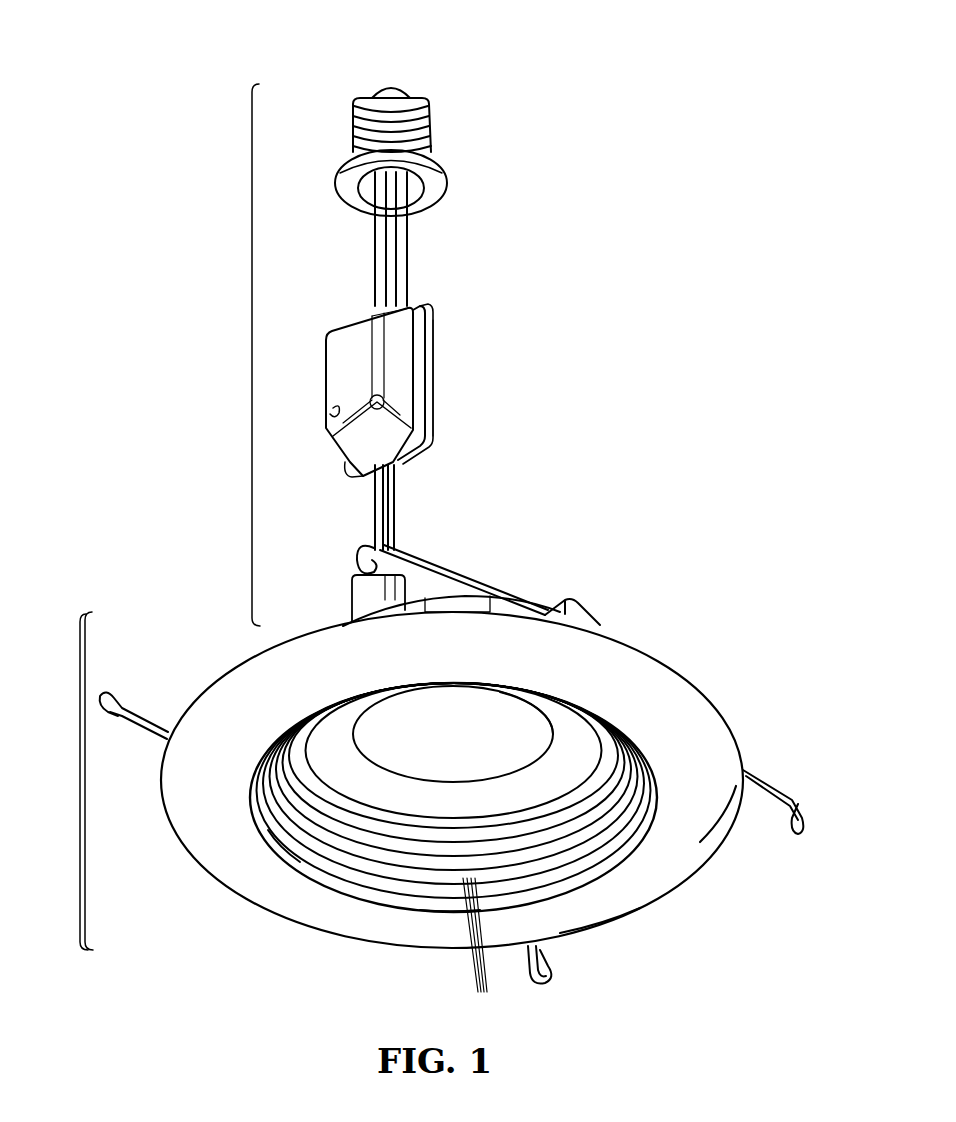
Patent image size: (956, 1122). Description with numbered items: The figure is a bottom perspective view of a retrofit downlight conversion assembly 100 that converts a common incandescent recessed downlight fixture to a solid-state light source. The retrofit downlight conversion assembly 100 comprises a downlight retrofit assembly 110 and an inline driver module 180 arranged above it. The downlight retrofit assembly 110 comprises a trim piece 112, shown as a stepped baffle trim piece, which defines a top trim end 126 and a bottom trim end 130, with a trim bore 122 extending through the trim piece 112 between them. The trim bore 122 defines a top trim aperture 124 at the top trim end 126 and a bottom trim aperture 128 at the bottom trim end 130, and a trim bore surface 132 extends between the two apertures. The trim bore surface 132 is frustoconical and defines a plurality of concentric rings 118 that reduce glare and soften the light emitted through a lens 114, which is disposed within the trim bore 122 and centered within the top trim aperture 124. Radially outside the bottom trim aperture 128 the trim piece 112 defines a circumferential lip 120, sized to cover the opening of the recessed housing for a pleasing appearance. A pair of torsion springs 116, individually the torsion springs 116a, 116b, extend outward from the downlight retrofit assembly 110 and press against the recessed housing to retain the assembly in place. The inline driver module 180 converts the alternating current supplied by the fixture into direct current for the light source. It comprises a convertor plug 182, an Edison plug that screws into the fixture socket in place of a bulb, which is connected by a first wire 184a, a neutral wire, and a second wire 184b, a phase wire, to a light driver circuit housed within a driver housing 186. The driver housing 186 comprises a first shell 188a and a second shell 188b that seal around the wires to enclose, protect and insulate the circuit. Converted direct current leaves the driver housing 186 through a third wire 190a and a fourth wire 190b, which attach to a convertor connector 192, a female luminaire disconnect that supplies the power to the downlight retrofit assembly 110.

The retrofit downlight conversion assembly 100 is at (115, 71).
The downlight retrofit assembly 110 is at (84, 786).
The trim piece 112 is at (668, 882).
The lens 114 is at (453, 730).
The torsion springs 116 is at (134, 715).
The torsion spring 116a is at (550, 984).
The torsion spring 116b is at (807, 814).
The concentric rings 118 is at (485, 992).
The circumferential lip 120 is at (712, 828).
The trim bore 122 is at (386, 872).
The top trim aperture 124 is at (509, 774).
The top trim end 126 is at (579, 746).
The bottom trim aperture 128 is at (440, 915).
The bottom trim end 130 is at (598, 909).
The trim bore surface 132 is at (318, 850).
The inline driver module 180 is at (251, 356).
The convertor plug 182 is at (432, 137).
The first wire 184a is at (375, 266).
The second wire 184b is at (402, 266).
The driver housing 186 is at (400, 380).
The first shell 188a is at (338, 371).
The second shell 188b is at (432, 424).
The third wire 190a is at (376, 524).
The fourth wire 190b is at (390, 524).
The convertor connector 192 is at (360, 600).